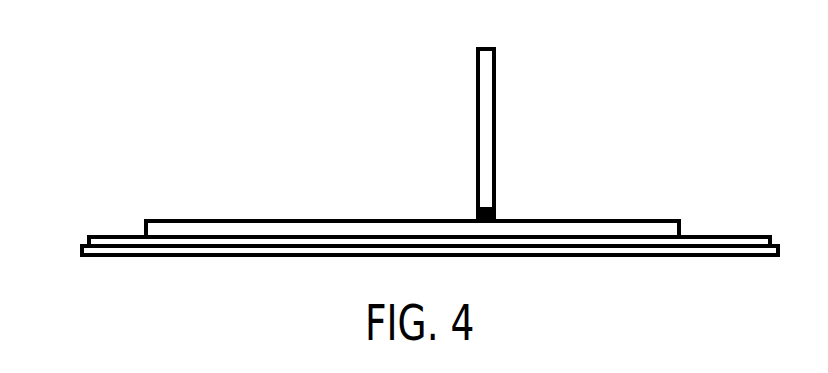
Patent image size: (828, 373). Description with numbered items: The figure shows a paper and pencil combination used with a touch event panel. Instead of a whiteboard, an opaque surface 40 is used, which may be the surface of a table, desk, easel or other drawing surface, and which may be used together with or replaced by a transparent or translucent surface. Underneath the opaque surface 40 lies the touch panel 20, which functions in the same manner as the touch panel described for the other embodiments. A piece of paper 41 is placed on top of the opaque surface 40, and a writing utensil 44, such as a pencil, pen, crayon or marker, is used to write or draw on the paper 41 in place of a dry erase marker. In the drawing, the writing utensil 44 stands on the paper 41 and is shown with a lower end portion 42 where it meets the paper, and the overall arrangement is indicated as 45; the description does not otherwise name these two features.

The touch panel 20 is at (82, 251).
The opaque surface 40 is at (133, 238).
The piece of paper 41 is at (197, 232).
The foot / base portion 42 is at (497, 216).
The writing utensil 44 is at (476, 62).
The assembly 45 is at (691, 176).